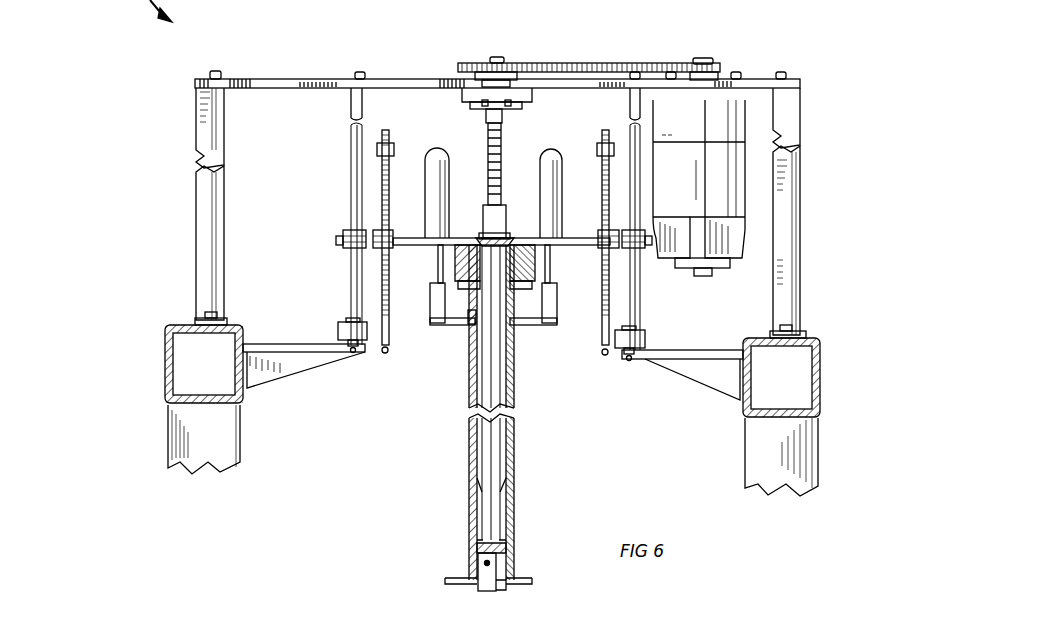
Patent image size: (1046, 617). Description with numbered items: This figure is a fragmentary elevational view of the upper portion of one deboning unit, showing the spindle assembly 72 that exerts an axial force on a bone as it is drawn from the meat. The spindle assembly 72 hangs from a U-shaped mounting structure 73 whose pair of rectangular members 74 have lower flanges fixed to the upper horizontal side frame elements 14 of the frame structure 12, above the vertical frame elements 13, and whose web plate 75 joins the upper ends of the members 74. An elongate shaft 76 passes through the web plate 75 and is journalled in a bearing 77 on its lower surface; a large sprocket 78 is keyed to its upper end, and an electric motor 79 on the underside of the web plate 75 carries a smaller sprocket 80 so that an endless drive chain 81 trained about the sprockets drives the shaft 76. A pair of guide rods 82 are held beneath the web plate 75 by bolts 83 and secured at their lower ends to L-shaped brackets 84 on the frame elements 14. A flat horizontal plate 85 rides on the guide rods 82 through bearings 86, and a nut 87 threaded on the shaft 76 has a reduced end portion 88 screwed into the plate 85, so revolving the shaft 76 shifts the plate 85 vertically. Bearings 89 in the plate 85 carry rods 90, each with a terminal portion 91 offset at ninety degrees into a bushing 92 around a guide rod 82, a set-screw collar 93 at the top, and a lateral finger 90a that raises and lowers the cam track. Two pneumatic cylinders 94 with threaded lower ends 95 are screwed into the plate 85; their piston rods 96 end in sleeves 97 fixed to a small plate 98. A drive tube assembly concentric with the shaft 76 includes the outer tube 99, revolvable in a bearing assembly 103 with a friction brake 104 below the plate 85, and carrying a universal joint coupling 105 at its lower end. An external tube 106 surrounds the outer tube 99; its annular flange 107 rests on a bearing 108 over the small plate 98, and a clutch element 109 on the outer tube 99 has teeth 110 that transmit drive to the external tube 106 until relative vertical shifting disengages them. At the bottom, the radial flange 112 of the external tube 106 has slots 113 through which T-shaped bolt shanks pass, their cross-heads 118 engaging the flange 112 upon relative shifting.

The frame structure 12 is at (845, 350).
The vertical frame element 13 is at (168, 455).
The upper horizontal side frame element 14 is at (165, 372).
The spindle assembly 72 is at (450, 450).
The mounting structure 73 is at (150, 128).
The rectangular member 74 is at (196, 213).
The web plate 75 is at (280, 79).
The elongate shaft 76 is at (488, 150).
The bearing 77 is at (510, 104).
The large sprocket 78 is at (458, 65).
The electric motor 79 is at (730, 268).
The sprocket 80 is at (715, 72).
The rack 81 is at (596, 63).
The guide rod 82 is at (351, 152).
The bolt 83 is at (360, 72).
The L-shaped bracket 84 is at (283, 368).
The plate 85 is at (336, 240).
The bearing 86 is at (343, 248).
The nut 87 is at (483, 228).
The reduced end portion 88 is at (503, 240).
The bearing 89 is at (390, 232).
The elongate rod 90 is at (389, 195).
The finger 90a is at (406, 338).
The terminal portion 91 is at (385, 353).
The bushing 92 is at (338, 330).
The collar 93 is at (394, 150).
The pneumatic cylinder 94 is at (437, 152).
The reduced lower end 95 is at (432, 247).
The piston rod 96 is at (438, 276).
The sleeve 97 is at (430, 306).
The small plate 98 is at (462, 326).
The outer tube 99 is at (497, 459).
The bearing assembly 103 is at (535, 270).
The friction brake 104 is at (532, 285).
The universal joint coupling 105 is at (496, 562).
The external tube 106 is at (514, 433).
The annular flange 107 is at (473, 300).
The bearing 108 is at (520, 325).
The clutch element 109 is at (512, 492).
The teeth 110 is at (477, 485).
The radial flange 112 is at (514, 590).
The slot 113 is at (532, 581).
The cross-head 118 is at (66, 611).